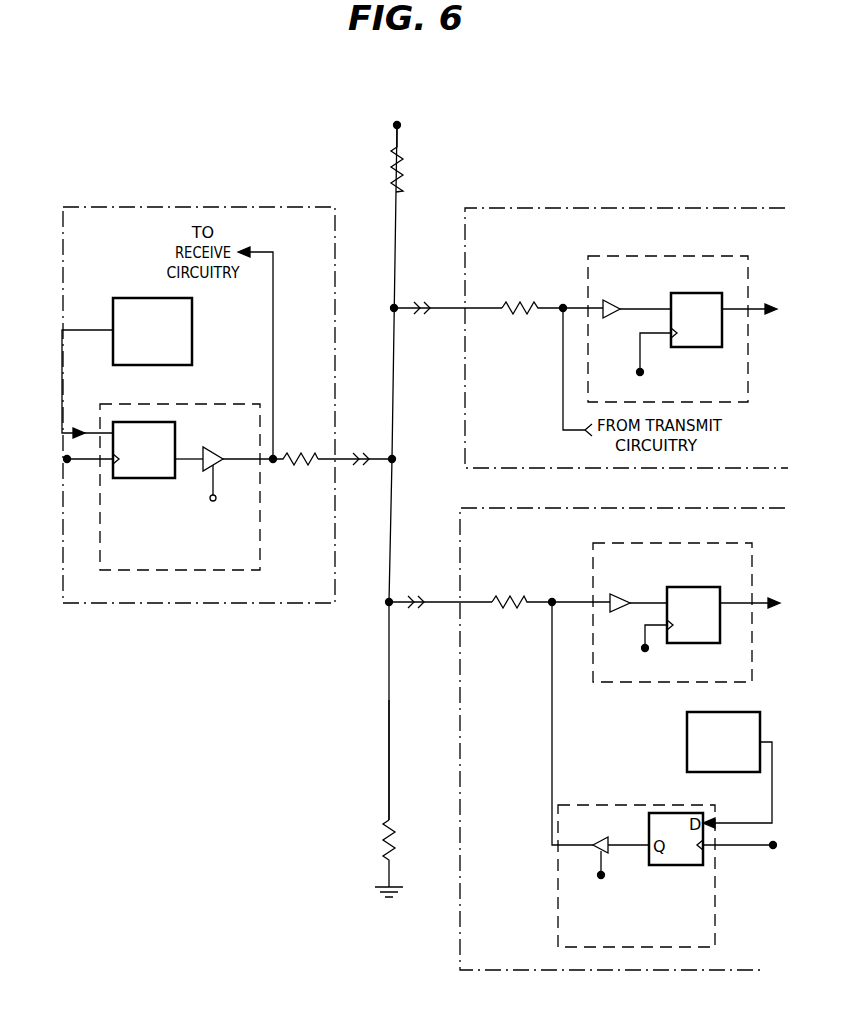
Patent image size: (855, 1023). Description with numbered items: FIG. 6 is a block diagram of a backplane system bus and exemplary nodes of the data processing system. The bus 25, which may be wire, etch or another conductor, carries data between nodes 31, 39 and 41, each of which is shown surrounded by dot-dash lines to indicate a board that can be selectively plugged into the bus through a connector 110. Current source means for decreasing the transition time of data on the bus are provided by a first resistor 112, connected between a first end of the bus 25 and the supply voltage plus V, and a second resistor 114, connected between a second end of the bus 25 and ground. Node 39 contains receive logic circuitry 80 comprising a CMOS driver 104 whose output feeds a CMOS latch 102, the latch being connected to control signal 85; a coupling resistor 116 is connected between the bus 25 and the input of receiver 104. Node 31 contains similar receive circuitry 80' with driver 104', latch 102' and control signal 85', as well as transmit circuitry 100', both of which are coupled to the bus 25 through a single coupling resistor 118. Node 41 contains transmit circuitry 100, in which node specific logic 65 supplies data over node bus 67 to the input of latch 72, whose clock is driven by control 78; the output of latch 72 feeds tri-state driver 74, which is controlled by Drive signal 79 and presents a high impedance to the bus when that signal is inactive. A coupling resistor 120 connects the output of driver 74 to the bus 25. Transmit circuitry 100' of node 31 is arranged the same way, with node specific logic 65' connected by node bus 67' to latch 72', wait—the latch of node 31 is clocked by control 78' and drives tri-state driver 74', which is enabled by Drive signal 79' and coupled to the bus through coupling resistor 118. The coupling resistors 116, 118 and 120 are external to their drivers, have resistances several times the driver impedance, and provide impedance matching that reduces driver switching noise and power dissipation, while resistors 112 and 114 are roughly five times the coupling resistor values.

The bus 25 is at (389, 785).
The node 31 is at (459, 519).
The node 39 is at (600, 208).
The node 41 is at (240, 605).
The node specific logic 65 is at (174, 331).
The node specific logic 65' is at (701, 741).
The node bus 67 is at (87, 384).
The node bus 67' is at (737, 785).
The latch 72 is at (176, 424).
The driver 74 is at (224, 444).
The driver 74' is at (600, 727).
The control 78 is at (73, 480).
The control 78' is at (745, 870).
The Drive signal 79 is at (207, 516).
The Drive signal 79' is at (617, 898).
The logic circuitry 80 is at (648, 317).
The logic circuitry 80' is at (651, 601).
The control signal 85 is at (652, 366).
The control signal 85' is at (664, 650).
The logic circuitry 100 is at (204, 476).
The logic circuitry 100' is at (601, 856).
The latch 102 is at (724, 306).
The latch 102' is at (723, 597).
The driver 104 is at (637, 296).
The driver 104' is at (638, 586).
The connector 110 is at (432, 306).
The first resistor 112 is at (406, 164).
The second resistor 114 is at (395, 838).
The coupling resistor 116 is at (530, 320).
The coupling resistor 118 is at (518, 596).
The coupling resistor 120 is at (291, 455).